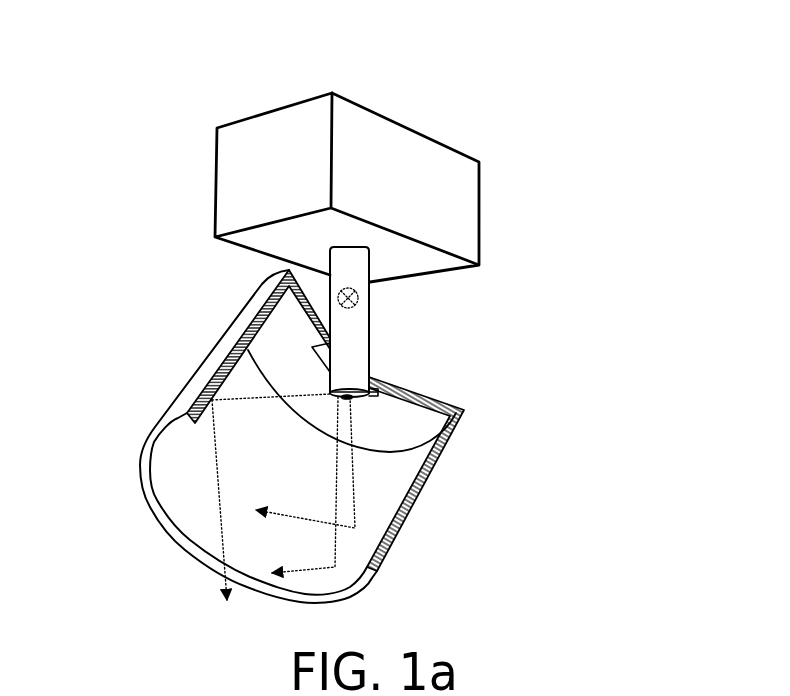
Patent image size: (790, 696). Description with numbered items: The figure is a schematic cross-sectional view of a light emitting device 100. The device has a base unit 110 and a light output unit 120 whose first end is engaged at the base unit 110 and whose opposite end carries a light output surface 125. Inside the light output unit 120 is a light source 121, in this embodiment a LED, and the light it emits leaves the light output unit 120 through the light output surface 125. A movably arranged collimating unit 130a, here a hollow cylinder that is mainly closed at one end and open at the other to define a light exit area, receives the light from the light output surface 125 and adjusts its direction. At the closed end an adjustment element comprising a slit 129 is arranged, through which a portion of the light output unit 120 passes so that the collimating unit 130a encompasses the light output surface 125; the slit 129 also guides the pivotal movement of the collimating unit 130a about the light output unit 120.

The light emitting device 100 is at (376, 310).
The base unit 110 is at (457, 207).
The light output unit 120 is at (353, 341).
The light source 121 is at (362, 298).
The light output surface 125 is at (346, 400).
The slit 129 is at (369, 396).
The collimating unit 130a is at (197, 390).